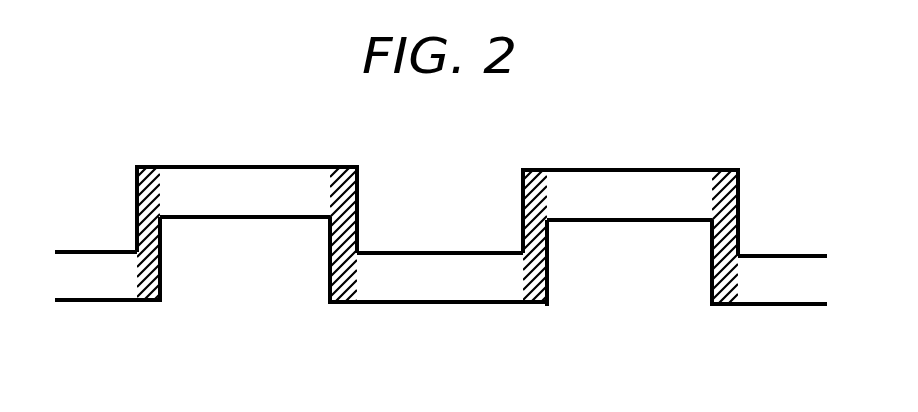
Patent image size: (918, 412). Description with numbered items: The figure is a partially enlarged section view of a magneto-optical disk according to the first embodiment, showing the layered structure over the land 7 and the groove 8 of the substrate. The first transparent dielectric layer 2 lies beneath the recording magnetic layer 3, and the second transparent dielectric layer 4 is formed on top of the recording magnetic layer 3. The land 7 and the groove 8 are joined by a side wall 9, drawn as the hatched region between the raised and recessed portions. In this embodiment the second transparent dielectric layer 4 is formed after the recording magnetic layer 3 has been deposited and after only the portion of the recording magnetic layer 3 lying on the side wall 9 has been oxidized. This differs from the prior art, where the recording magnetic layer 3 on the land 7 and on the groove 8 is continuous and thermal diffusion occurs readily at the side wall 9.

The first transparent dielectric layer 2 is at (793, 321).
The recording magnetic layer 3 is at (769, 280).
The second transparent dielectric layer 4 is at (793, 240).
The land 7 is at (247, 165).
The groove 8 is at (438, 304).
The side wall 9 is at (358, 213).